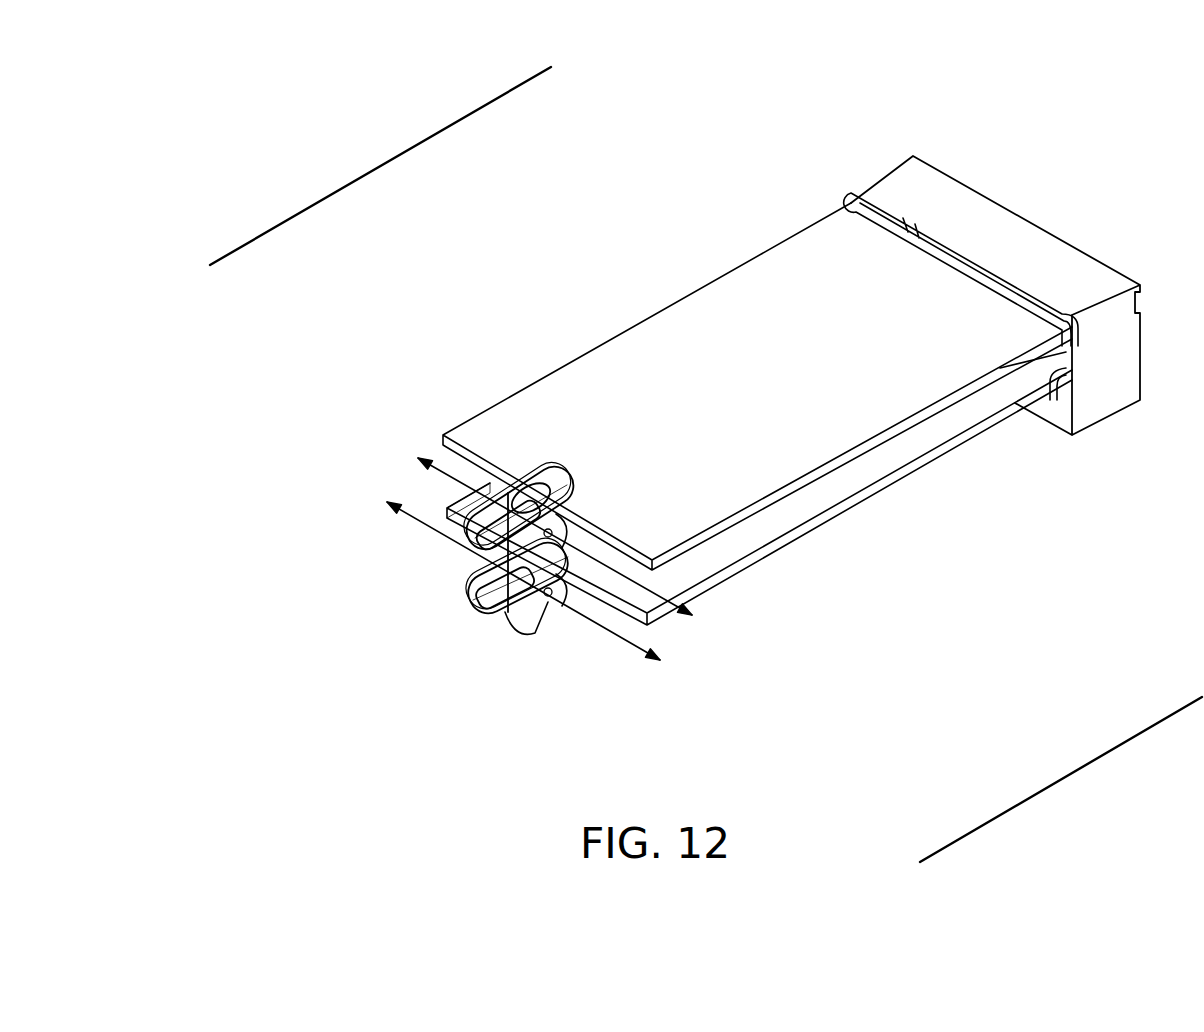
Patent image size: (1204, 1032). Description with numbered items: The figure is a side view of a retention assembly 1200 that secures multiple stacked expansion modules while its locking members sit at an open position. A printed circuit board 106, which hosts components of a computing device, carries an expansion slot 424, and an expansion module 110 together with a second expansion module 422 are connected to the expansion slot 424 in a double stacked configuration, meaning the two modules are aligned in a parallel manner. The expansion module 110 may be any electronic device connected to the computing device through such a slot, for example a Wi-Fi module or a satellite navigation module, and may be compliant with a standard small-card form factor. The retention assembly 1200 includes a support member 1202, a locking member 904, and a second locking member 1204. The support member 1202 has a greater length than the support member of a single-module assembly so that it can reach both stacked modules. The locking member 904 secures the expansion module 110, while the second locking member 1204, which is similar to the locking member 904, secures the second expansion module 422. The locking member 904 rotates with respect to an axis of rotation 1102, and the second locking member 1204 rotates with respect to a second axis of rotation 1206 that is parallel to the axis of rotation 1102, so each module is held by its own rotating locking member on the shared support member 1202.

The printed circuit board 106 is at (418, 143).
The expansion module 110 is at (903, 478).
The second expansion module 422 is at (591, 349).
The expansion slot 424 is at (898, 163).
The locking member 904 is at (452, 592).
The axis of rotation 1102 is at (640, 653).
The retention assembly 1200 is at (375, 537).
The support member 1202 is at (536, 638).
The second locking member 1204 is at (482, 508).
The second axis of rotation 1206 is at (678, 617).